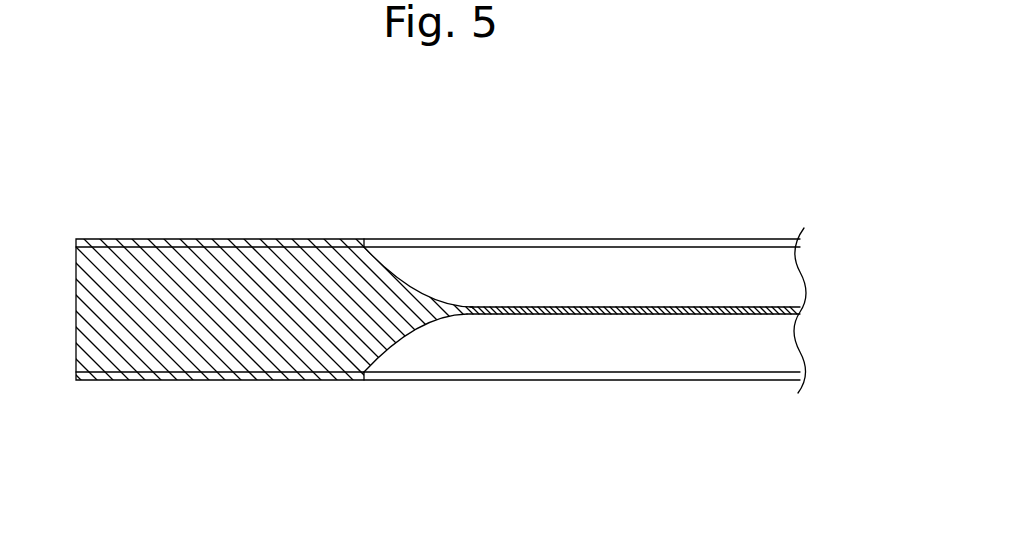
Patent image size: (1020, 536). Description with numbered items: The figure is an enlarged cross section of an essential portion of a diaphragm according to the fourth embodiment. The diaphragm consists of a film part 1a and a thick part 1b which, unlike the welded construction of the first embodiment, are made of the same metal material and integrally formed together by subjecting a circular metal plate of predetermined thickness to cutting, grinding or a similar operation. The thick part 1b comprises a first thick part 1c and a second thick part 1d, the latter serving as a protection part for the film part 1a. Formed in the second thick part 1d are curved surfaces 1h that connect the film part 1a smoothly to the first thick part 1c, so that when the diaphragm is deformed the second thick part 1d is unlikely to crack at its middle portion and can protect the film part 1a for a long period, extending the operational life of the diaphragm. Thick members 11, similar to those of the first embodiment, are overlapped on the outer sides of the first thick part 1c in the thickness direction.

The thick member 11 is at (180, 239).
The thick part 1b is at (304, 252).
The first thick part 1c is at (287, 273).
The second thick part 1d is at (375, 278).
The curved surface 1h is at (415, 283).
The film part 1a is at (617, 305).